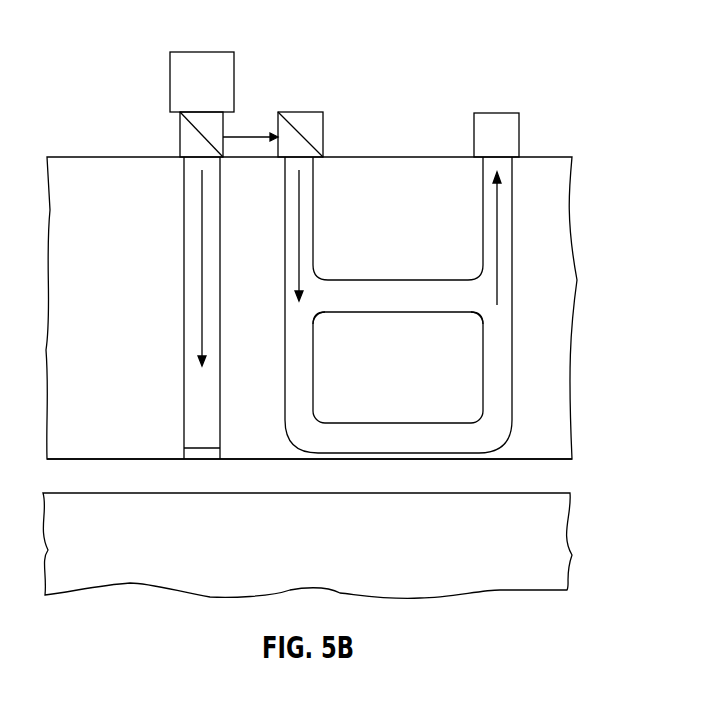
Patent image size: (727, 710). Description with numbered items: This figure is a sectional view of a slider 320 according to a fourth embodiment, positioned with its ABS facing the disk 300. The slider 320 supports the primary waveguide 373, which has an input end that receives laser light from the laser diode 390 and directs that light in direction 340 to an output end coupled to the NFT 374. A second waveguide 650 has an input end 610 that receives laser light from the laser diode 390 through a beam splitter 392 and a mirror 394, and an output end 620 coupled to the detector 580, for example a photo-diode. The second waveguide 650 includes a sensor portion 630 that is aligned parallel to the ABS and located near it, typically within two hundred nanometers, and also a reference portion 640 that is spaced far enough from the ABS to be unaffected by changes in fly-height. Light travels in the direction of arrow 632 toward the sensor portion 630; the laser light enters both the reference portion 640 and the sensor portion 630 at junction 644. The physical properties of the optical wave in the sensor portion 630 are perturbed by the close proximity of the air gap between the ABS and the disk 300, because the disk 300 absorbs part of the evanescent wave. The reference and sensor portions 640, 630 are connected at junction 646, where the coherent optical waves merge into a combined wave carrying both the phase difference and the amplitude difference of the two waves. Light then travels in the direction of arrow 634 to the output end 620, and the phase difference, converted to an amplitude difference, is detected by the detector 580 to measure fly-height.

The disk 300 is at (562, 550).
The slider 320 is at (555, 396).
The direction of laser light 340 is at (202, 207).
The primary waveguide 373 is at (184, 315).
The NFT 374 is at (200, 453).
The laser diode 390 is at (234, 64).
The beam splitter 392 is at (180, 135).
The mirror 394 is at (323, 127).
The detector 580 is at (519, 124).
The input end 610 is at (303, 160).
The output end 620 is at (500, 158).
The sensor portion 630 is at (390, 423).
The arrow 632 is at (299, 208).
The arrow 634 is at (483, 212).
The reference portion 640 is at (397, 280).
The junction 644 is at (318, 318).
The junction 646 is at (478, 318).
The second waveguide 650 is at (512, 332).
The air bearing surface ABS is at (538, 460).